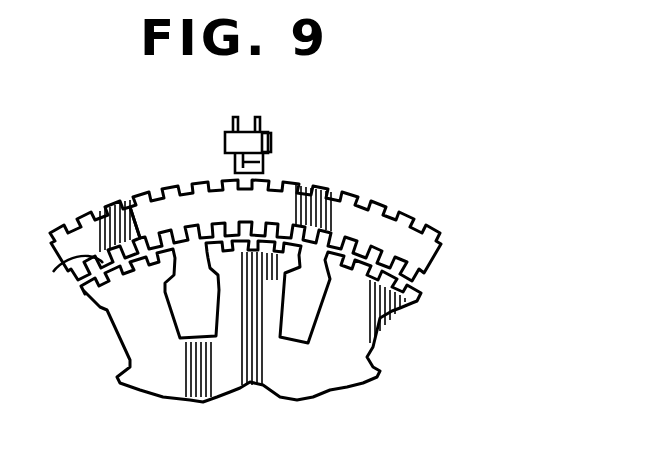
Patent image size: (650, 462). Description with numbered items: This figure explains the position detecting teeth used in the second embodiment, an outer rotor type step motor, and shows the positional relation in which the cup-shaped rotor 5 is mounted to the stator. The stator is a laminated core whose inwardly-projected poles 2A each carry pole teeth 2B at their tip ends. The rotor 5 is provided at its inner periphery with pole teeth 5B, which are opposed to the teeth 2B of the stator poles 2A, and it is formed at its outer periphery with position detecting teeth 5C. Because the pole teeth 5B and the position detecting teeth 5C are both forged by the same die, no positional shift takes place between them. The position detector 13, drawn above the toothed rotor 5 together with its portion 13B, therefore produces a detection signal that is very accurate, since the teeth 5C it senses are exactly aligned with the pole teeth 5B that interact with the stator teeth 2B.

The rotor 5 is at (367, 220).
The pole teeth 5B is at (53, 272).
The position detecting teeth 5C is at (80, 223).
The poles 2A is at (130, 335).
The pole teeth 2B is at (413, 293).
The position detector 13 is at (232, 160).
The terminal tab 13B is at (268, 138).